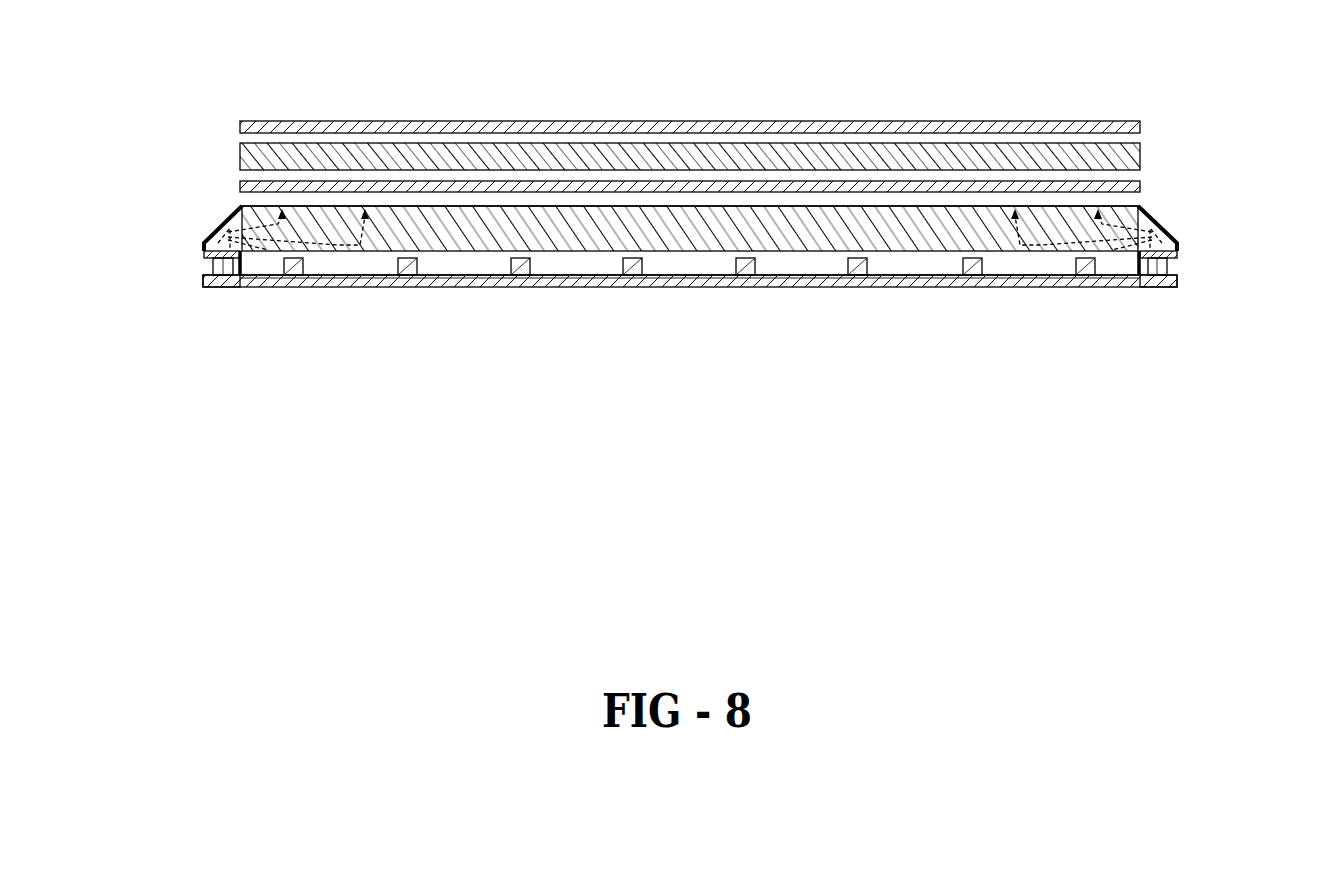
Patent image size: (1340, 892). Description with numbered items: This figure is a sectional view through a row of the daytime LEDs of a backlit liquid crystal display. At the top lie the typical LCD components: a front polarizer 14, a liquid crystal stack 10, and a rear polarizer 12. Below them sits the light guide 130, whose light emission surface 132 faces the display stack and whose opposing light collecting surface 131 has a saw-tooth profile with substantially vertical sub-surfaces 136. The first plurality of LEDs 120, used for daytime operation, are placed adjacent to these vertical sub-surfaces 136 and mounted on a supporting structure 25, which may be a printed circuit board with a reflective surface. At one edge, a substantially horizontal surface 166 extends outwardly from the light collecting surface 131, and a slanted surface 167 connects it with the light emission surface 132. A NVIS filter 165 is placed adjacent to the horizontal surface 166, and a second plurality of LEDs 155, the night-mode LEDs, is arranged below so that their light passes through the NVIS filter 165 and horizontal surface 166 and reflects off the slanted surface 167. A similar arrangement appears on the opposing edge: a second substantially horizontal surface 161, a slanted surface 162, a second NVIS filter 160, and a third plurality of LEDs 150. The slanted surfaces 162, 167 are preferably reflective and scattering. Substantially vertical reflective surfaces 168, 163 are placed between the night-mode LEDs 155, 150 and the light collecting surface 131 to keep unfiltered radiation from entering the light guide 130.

The liquid crystal stack 10 is at (1141, 157).
The rear polarizer 12 is at (1141, 187).
The front polarizer 14 is at (1141, 126).
The supporting structure 25 is at (1178, 282).
The first plurality of LEDs 120 is at (405, 268).
The light guide 130 is at (685, 232).
The light collecting surface 131 is at (362, 263).
The light emission surface 132 is at (245, 207).
The vertical sub-surfaces 136 is at (805, 263).
The third plurality of LEDs 150 is at (224, 287).
The second plurality of LEDs 155 is at (1153, 287).
The second NVIS filter 160 is at (211, 258).
The second substantially horizontal surface 161 is at (216, 238).
The slanted surface 162 is at (222, 226).
The reflective surface 163 is at (241, 264).
The NVIS filter 165 is at (1167, 260).
The substantially horizontal surface 166 is at (1170, 228).
The slanted surface 167 is at (1160, 218).
The reflective surface 168 is at (1139, 272).